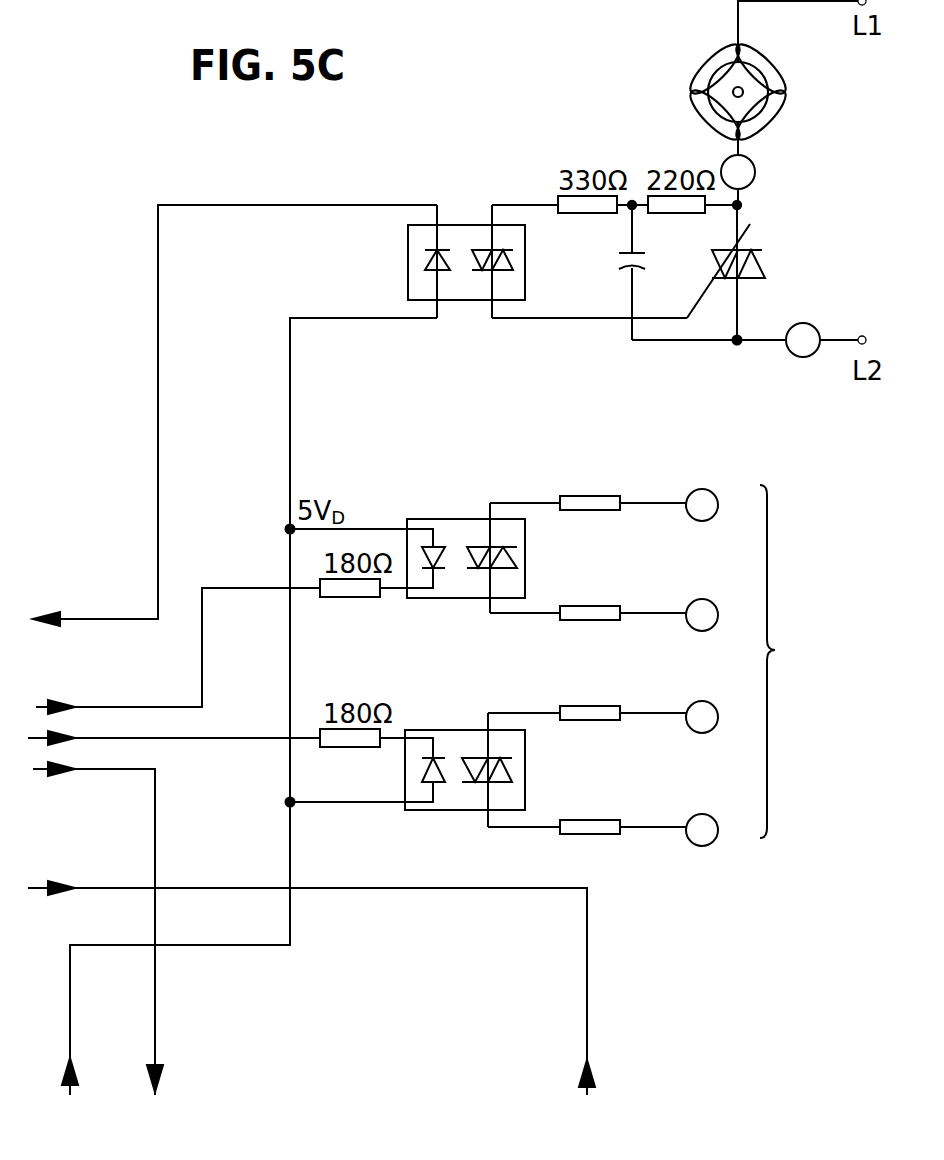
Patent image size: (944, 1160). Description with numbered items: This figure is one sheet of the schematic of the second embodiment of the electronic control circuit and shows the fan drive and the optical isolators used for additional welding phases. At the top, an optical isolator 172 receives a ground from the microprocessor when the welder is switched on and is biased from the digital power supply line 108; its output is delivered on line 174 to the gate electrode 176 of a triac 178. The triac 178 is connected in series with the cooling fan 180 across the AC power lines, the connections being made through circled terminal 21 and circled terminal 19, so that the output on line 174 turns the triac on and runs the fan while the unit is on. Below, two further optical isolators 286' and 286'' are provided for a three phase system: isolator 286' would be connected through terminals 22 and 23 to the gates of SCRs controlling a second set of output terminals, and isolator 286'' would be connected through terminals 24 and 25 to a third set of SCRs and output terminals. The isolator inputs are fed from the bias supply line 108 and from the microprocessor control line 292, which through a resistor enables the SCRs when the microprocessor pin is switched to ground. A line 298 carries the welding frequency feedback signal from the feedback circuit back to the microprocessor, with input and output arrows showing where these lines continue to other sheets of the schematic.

The cooling fan 180 is at (708, 96).
The terminal 21 is at (738, 172).
The terminal 19 is at (803, 340).
The triac 178 is at (748, 228).
The gate electrode 176 is at (704, 296).
The line 174 is at (540, 320).
The optical isolator 172 is at (465, 300).
The power supply line 108 is at (292, 426).
The optical isolator 286'' is at (432, 540).
The optical isolator 286' is at (431, 757).
The terminal 24 is at (604, 505).
The terminal 25 is at (604, 615).
The terminal 22 is at (603, 717).
The terminal 23 is at (603, 830).
The line 292 is at (86, 770).
The line 298 is at (120, 888).